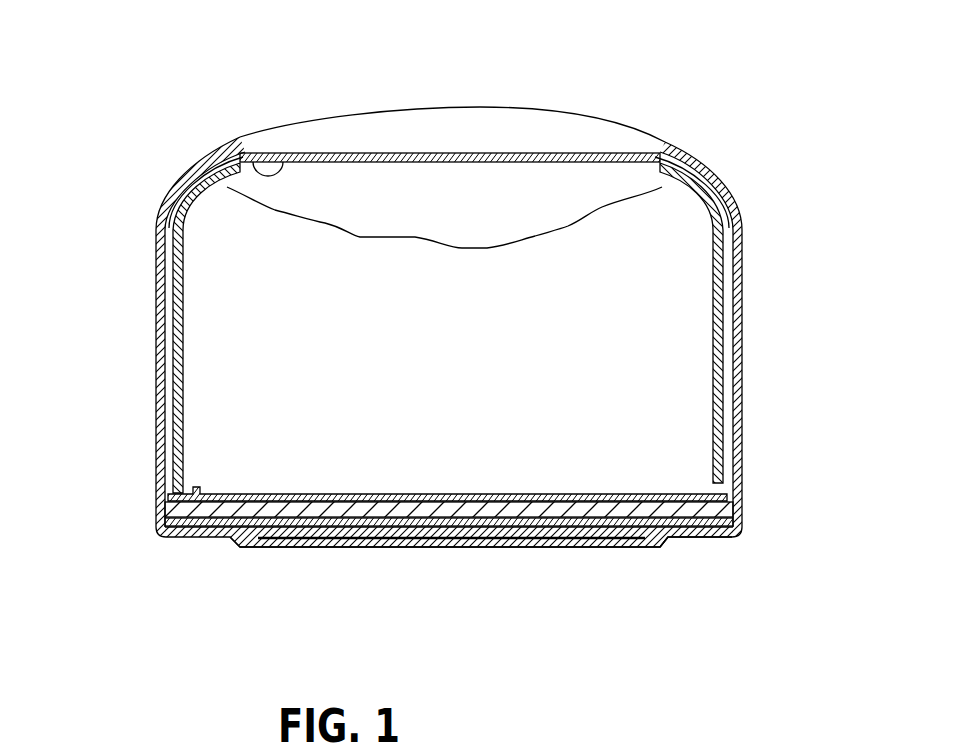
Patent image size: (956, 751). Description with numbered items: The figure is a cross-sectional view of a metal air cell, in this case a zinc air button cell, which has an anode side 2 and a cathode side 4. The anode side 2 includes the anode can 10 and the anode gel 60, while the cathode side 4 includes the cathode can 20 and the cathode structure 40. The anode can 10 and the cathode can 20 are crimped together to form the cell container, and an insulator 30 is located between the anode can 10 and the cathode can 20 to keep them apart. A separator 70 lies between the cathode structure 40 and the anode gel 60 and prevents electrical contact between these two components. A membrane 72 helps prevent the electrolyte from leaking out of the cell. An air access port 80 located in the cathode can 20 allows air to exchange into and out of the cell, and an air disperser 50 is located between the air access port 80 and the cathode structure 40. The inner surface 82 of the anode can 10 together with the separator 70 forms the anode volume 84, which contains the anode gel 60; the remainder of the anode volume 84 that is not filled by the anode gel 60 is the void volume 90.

The anode side 2 is at (395, 107).
The cathode side 4 is at (430, 548).
The anode can 10 is at (435, 335).
The cathode can 20 is at (215, 549).
The insulator 30 is at (738, 236).
The cathode structure 40 is at (556, 512).
The air disperser 50 is at (635, 557).
The anode gel 60 is at (623, 323).
The separator 70 is at (180, 497).
The membrane 72 is at (705, 530).
The air access port 80 is at (547, 547).
The inner surface 82 is at (250, 163).
The anode volume 84 is at (237, 273).
The void volume 90 is at (357, 187).